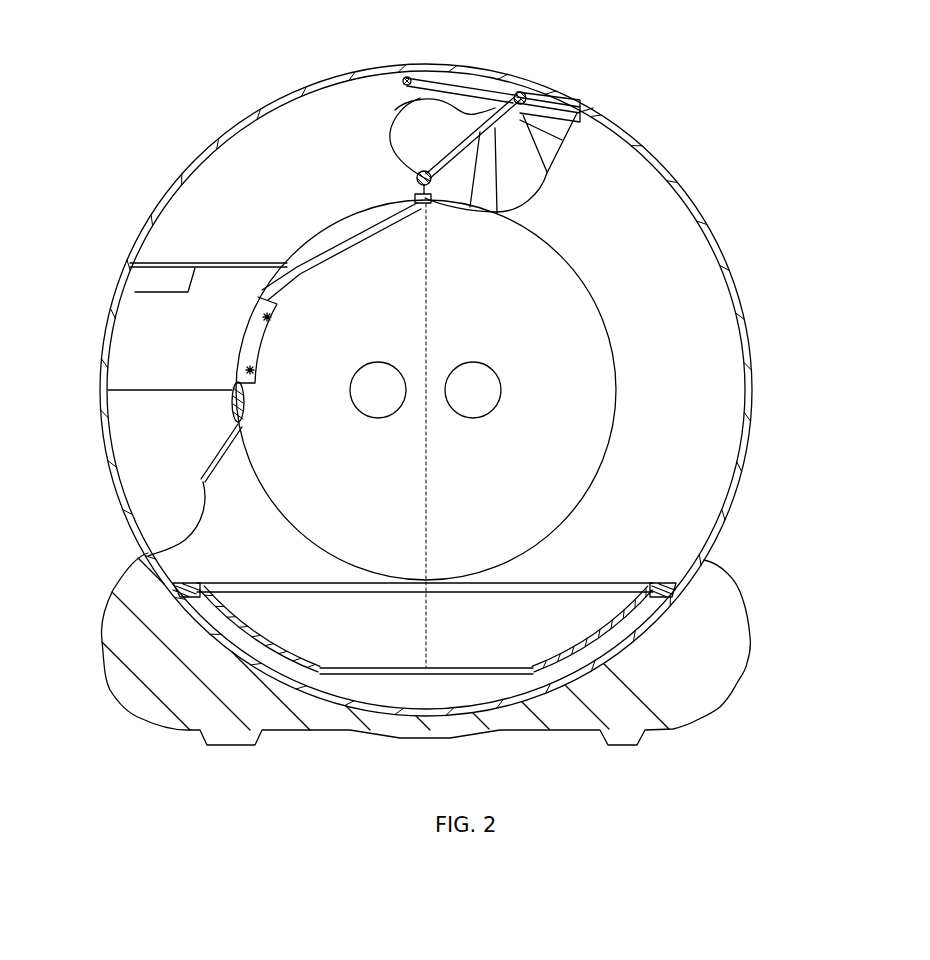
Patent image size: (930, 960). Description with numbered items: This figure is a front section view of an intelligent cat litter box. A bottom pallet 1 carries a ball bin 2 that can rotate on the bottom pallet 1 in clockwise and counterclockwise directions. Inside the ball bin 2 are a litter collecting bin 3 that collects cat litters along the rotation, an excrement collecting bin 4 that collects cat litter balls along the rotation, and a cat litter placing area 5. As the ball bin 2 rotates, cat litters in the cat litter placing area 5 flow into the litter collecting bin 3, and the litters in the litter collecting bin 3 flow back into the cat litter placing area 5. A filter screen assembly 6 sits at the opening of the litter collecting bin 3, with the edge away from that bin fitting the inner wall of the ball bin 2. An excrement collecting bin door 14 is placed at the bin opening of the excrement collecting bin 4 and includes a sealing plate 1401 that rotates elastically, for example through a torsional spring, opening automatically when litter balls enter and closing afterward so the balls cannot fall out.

The bottom pallet 1 is at (741, 628).
The ball bin 2 is at (750, 410).
The litter collecting bin 3 is at (128, 312).
The excrement collecting bin 4 is at (303, 115).
The cat litter placing area 5 is at (557, 672).
The filter screen assembly 6 is at (200, 480).
The excrement collecting bin door 14 is at (535, 97).
The sealing plate 1401 is at (453, 90).